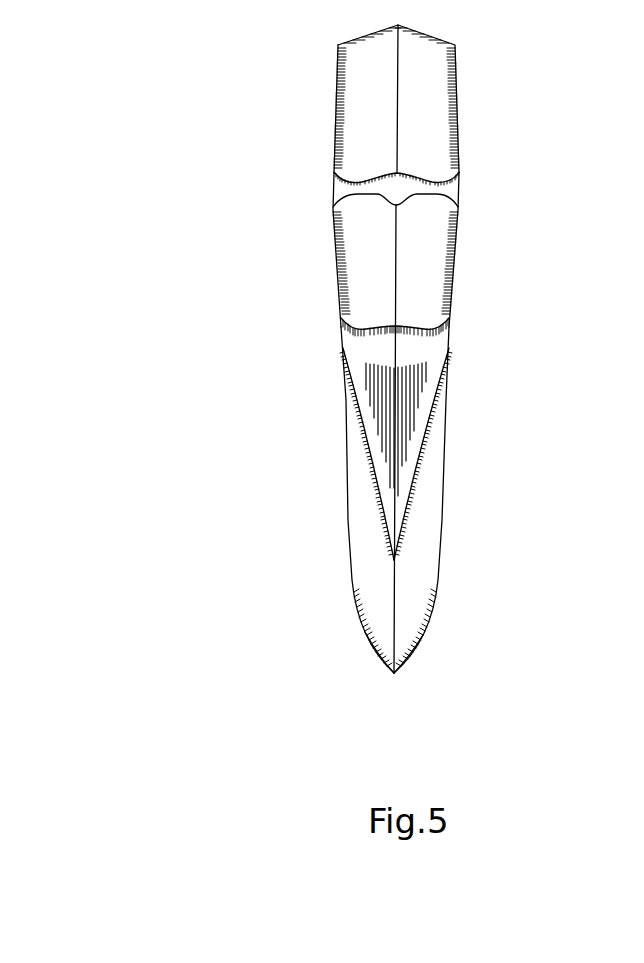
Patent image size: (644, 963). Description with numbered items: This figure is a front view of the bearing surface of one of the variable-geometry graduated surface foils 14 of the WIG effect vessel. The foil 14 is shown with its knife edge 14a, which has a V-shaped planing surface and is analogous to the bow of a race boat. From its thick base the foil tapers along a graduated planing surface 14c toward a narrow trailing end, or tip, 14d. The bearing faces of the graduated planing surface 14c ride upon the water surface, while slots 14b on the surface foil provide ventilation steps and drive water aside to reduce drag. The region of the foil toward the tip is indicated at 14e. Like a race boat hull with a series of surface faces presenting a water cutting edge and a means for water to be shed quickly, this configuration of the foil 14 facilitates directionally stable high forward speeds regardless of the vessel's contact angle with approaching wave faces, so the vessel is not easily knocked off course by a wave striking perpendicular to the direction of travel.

The variable-geometry graduated surface foil 14 is at (223, 195).
The knife edge 14a is at (395, 588).
The slots 14b is at (448, 185).
The graduated planing surface 14c is at (422, 83).
The trailing end, or tip, of the foil 14d is at (418, 640).
The pointed tip section 14e is at (296, 678).